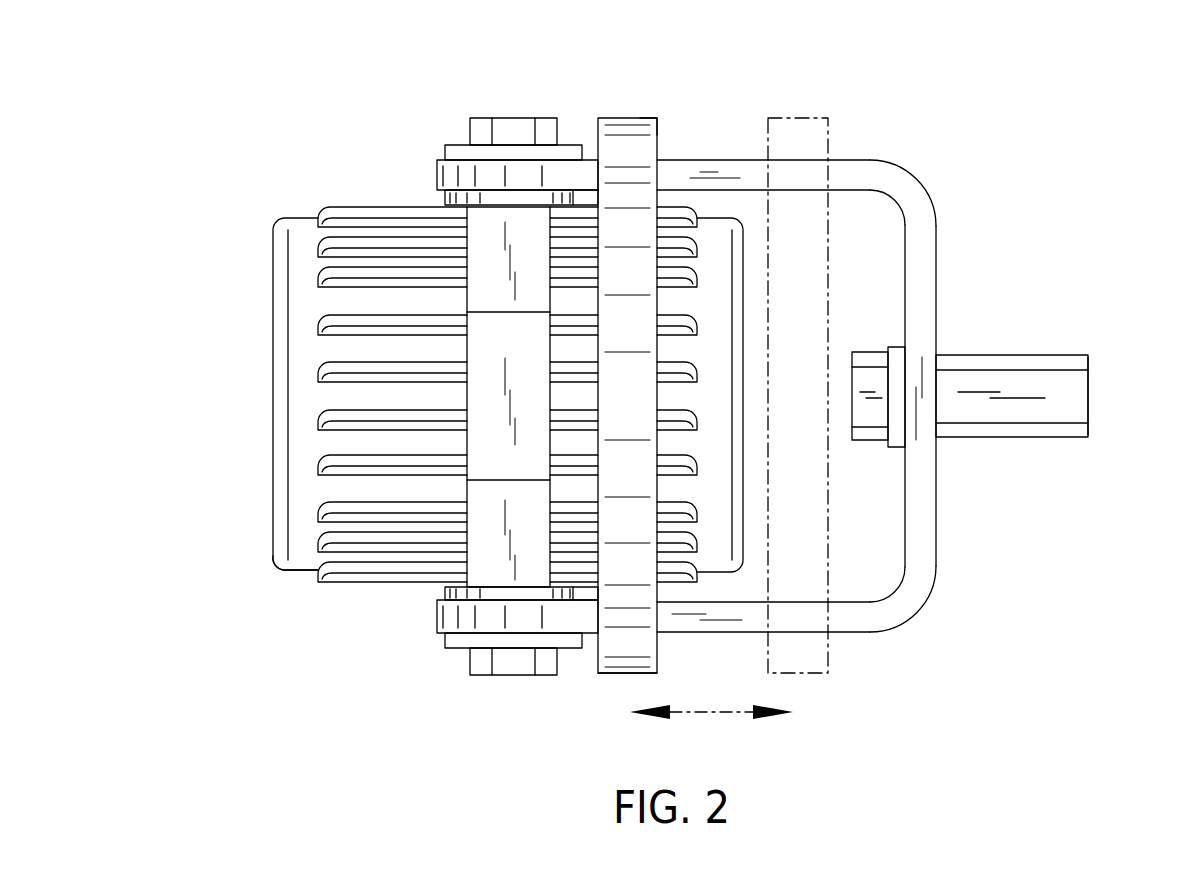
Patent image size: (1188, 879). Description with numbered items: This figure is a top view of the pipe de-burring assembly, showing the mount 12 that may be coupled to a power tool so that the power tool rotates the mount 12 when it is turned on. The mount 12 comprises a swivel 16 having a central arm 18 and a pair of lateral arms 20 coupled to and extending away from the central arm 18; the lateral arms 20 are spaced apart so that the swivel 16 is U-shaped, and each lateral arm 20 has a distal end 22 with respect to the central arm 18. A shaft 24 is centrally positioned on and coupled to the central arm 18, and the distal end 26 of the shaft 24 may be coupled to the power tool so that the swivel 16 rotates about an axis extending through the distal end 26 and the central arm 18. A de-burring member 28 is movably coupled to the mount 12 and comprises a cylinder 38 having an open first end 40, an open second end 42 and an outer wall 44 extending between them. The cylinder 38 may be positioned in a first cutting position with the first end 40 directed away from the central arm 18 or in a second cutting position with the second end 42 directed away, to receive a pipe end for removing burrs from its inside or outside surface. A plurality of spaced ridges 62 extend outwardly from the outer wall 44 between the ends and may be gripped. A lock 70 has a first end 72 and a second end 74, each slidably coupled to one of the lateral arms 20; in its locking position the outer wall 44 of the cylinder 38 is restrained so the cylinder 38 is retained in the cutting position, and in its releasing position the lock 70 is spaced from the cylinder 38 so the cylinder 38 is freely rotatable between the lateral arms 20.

The mount 12 is at (895, 150).
The swivel 16 is at (916, 178).
The central arm 18 is at (936, 546).
The lateral arms 20 is at (713, 160).
The distal end 22 is at (437, 172).
The shaft 24 is at (1043, 355).
The distal end 26 is at (1088, 393).
The de-burring member 28 is at (296, 190).
The cylinder 38 is at (278, 568).
The first end 40 is at (275, 373).
The second end 42 is at (745, 250).
The outer wall 44 is at (300, 483).
The ridges 62 is at (390, 275).
The lock 70 is at (657, 118).
The first end 72 is at (630, 118).
The second end 74 is at (613, 673).